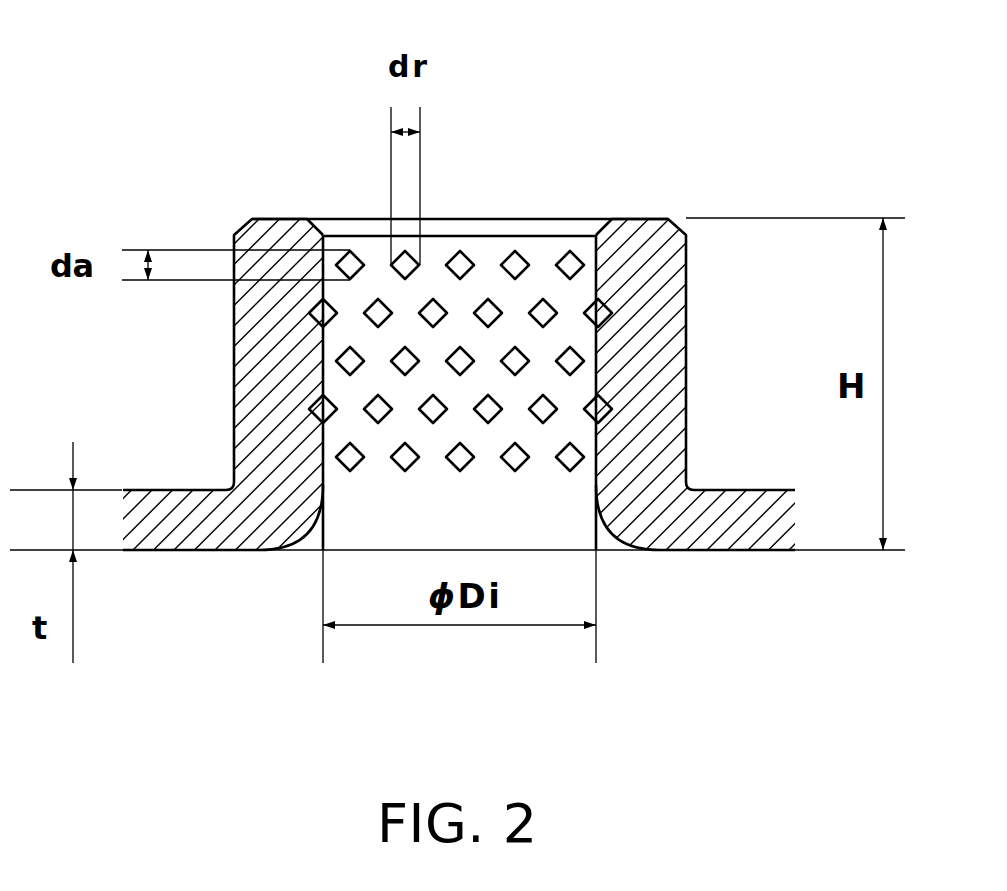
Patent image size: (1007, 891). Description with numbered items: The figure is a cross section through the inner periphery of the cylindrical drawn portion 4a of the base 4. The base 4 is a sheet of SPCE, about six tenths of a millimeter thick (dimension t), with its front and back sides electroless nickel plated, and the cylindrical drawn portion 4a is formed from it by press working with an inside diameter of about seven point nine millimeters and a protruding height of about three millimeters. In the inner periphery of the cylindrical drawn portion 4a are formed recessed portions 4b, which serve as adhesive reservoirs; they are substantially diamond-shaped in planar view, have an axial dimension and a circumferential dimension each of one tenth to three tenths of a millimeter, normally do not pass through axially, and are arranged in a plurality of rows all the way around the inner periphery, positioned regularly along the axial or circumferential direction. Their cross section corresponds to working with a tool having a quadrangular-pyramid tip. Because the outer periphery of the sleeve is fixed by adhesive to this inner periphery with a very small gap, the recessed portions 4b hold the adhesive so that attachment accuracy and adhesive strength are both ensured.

The base 4 is at (503, 384).
The cylindrical drawn portion 4a is at (647, 330).
The recessed portions 4b is at (463, 265).